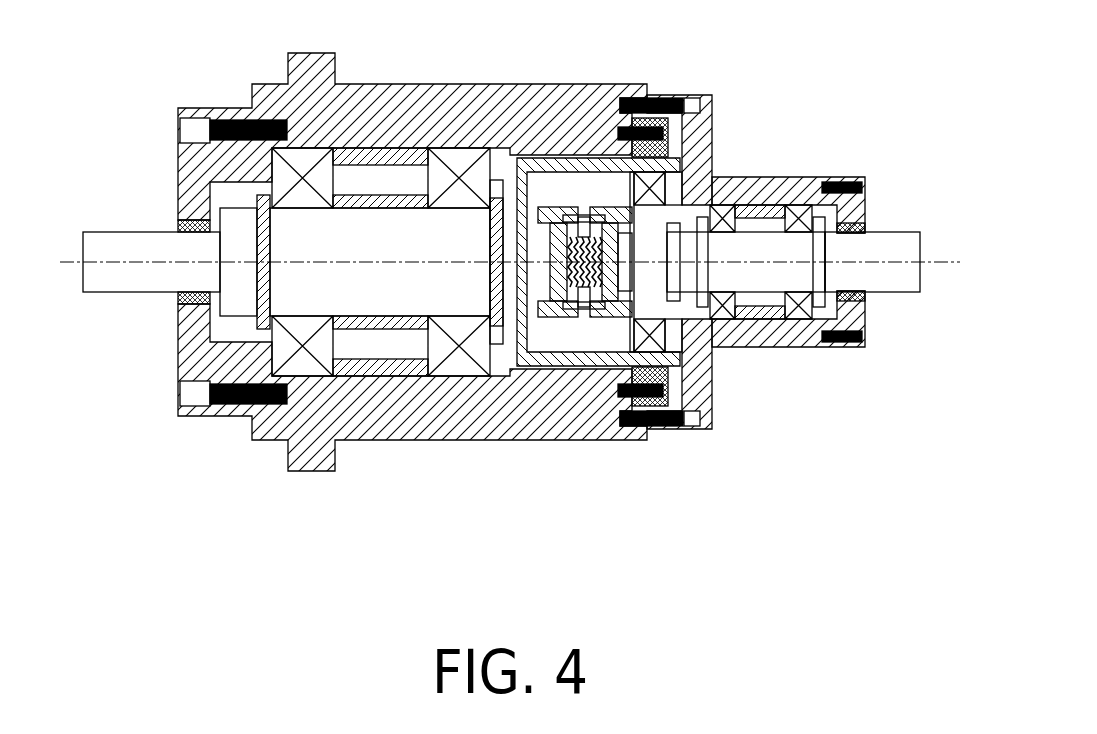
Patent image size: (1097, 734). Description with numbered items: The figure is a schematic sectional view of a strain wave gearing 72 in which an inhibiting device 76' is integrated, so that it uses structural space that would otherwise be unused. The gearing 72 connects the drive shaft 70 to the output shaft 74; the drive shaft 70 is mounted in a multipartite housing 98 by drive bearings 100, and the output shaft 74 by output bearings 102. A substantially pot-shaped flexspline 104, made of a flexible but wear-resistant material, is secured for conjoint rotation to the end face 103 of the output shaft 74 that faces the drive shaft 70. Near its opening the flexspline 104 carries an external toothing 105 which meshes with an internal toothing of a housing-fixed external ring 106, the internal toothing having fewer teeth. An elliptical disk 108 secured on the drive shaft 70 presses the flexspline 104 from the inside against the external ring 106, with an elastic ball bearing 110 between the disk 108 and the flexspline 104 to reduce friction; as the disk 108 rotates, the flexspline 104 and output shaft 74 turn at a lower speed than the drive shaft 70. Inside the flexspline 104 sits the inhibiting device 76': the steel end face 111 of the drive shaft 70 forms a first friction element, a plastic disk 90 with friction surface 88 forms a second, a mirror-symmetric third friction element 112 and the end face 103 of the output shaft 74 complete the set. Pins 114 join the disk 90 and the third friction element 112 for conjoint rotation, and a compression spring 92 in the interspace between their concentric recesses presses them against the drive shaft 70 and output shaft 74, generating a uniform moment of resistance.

The drive shaft 70 is at (905, 250).
The gearing 72 is at (232, 468).
The output shaft 74 is at (125, 240).
The inhibiting device 76' is at (557, 156).
The friction surface 88 is at (707, 243).
The disk 90 is at (573, 312).
The compression spring 92 is at (556, 254).
The housing 98 is at (272, 83).
The drive bearings 100 is at (797, 203).
The output bearings 102 is at (453, 150).
The end face 103 is at (500, 373).
The flexspline 104 is at (570, 160).
The external toothing 105 is at (675, 153).
The external ring 106 is at (670, 397).
The elliptical disk 108 is at (708, 357).
The elastic ball bearing 110 is at (637, 340).
The end face 111 is at (653, 437).
The third friction element 112 is at (543, 303).
The pins 114 is at (582, 222).